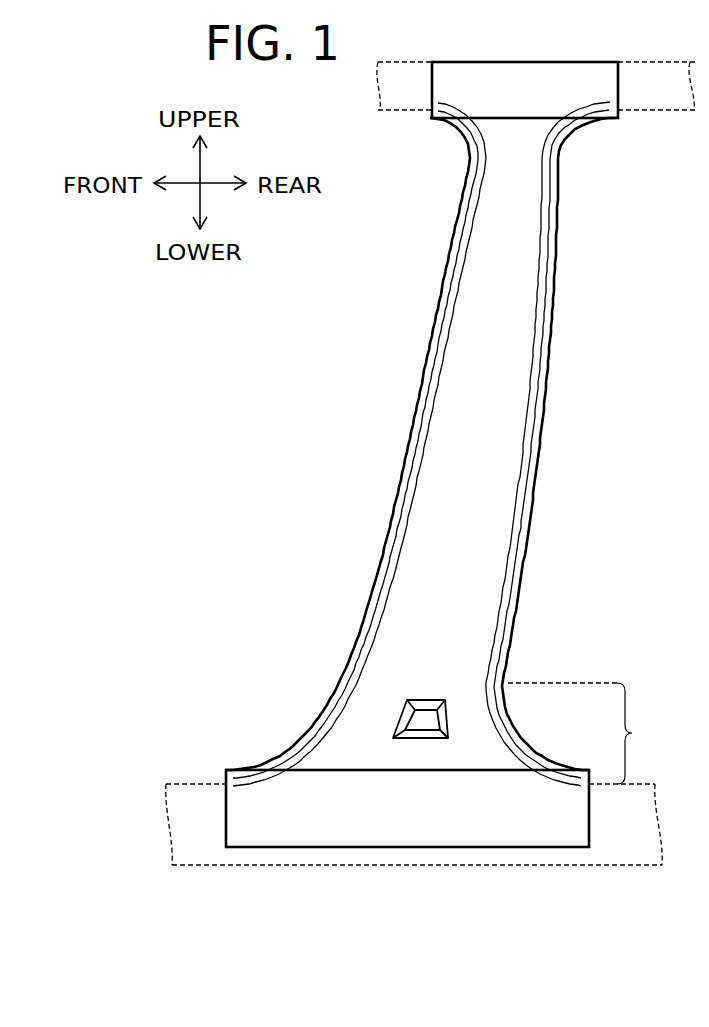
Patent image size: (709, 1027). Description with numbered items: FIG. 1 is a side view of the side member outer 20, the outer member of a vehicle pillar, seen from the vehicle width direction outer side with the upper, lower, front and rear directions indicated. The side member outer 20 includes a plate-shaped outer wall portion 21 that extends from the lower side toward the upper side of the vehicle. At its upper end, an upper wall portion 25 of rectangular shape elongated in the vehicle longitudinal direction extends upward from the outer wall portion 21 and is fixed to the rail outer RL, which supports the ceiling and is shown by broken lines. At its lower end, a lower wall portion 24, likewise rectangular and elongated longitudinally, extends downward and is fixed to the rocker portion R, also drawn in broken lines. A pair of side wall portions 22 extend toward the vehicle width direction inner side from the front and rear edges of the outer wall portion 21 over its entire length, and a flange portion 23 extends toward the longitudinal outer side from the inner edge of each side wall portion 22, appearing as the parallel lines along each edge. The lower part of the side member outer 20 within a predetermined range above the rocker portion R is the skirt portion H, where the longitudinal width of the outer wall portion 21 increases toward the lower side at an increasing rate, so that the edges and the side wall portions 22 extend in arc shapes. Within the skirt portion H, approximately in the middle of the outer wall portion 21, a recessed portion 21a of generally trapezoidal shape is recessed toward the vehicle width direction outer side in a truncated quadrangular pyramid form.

The side member outer 20 is at (340, 331).
The outer wall portion 21 is at (518, 331).
The recessed portion 21a is at (430, 698).
The side wall portion 22 is at (402, 548).
The flange portion 23 is at (405, 455).
The lower wall portion 24 is at (285, 825).
The upper wall portion 25 is at (500, 73).
The rail outer RL is at (655, 60).
The rocker portion R is at (617, 866).
The skirt portion H is at (580, 733).